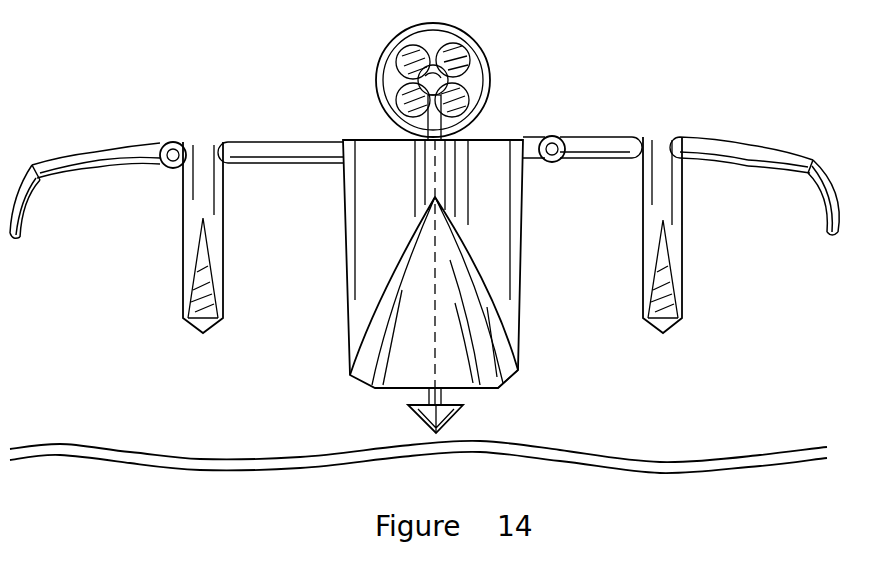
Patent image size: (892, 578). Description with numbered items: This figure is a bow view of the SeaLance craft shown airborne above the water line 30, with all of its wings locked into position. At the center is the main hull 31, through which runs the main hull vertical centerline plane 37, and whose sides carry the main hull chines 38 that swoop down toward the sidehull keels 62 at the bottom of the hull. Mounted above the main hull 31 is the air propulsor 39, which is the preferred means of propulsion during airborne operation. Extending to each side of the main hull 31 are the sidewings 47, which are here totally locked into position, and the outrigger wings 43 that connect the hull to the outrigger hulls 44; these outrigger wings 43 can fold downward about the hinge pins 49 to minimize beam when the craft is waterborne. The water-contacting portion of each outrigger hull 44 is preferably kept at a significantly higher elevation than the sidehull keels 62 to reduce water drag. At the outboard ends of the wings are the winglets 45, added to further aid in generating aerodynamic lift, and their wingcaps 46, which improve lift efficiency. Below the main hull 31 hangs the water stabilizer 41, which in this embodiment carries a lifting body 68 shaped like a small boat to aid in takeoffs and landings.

The water line 30 is at (62, 444).
The main hull 31 is at (493, 140).
The main hull vertical centerline plane 37 is at (437, 332).
The main hull chines 38 is at (422, 222).
The air propulsor 39 is at (460, 57).
The water stabilizer 41 is at (412, 396).
The outrigger wings 43 is at (288, 143).
The outrigger hull 44 is at (223, 199).
The winglets 45 is at (48, 156).
The wingcaps 46 is at (28, 197).
The sidewings 47 is at (232, 143).
The hinge pins 49 is at (176, 145).
The sidehull keels 62 is at (505, 378).
The lifting body 68 is at (448, 421).